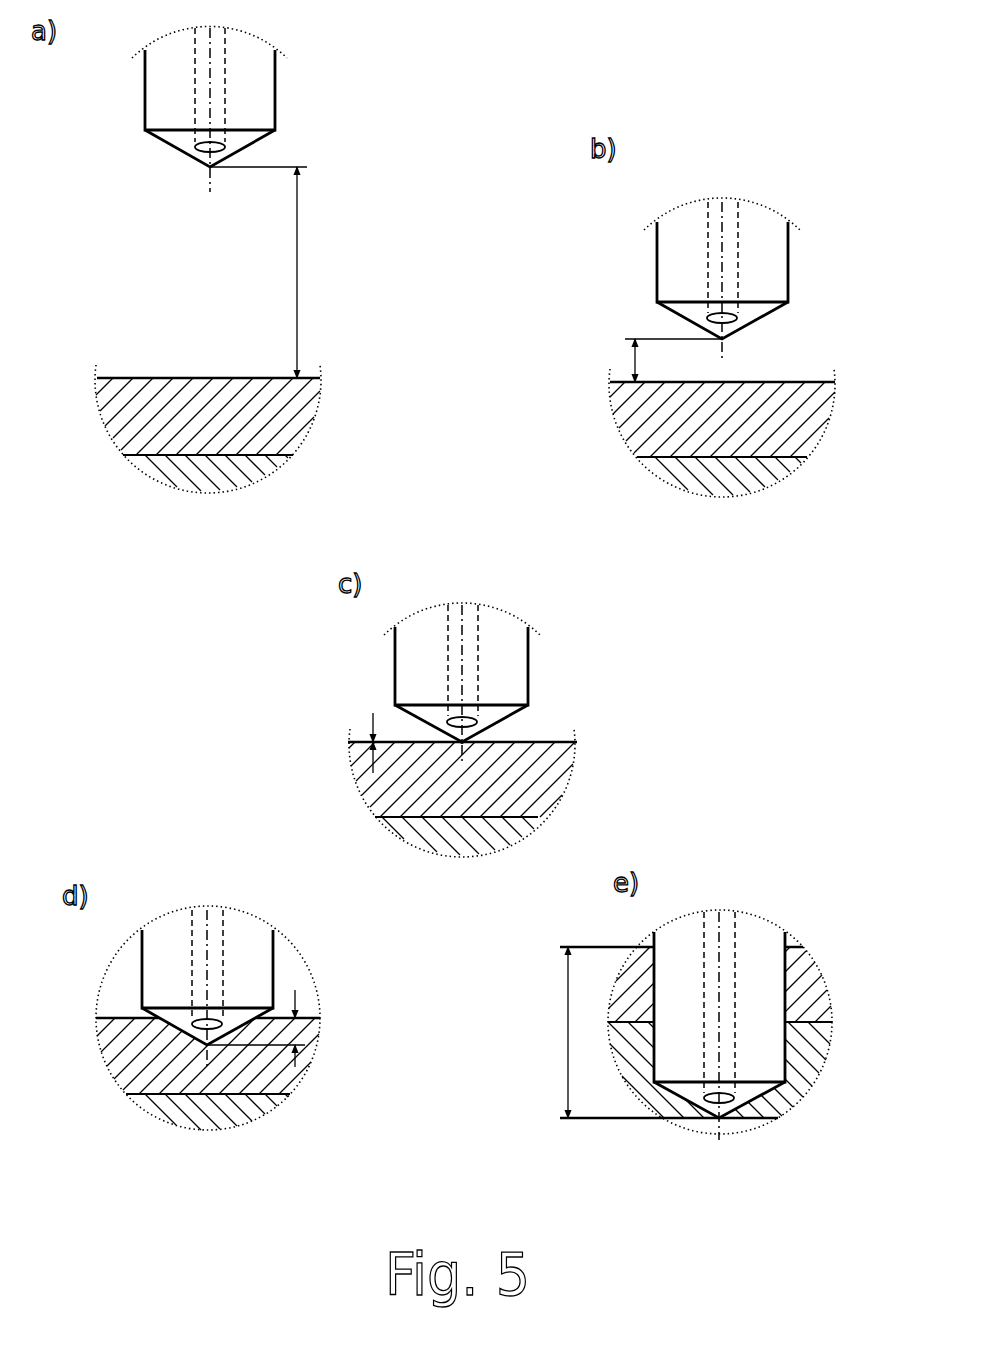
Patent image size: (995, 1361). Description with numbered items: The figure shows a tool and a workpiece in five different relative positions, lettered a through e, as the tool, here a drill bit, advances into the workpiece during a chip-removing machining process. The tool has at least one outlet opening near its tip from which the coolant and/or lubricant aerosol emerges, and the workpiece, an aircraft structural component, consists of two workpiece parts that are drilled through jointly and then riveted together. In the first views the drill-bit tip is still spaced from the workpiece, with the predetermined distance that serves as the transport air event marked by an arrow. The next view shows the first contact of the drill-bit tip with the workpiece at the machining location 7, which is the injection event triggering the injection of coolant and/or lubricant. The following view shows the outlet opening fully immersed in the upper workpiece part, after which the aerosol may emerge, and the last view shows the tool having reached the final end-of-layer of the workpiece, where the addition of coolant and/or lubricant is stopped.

The machining location 7 is at (488, 735).